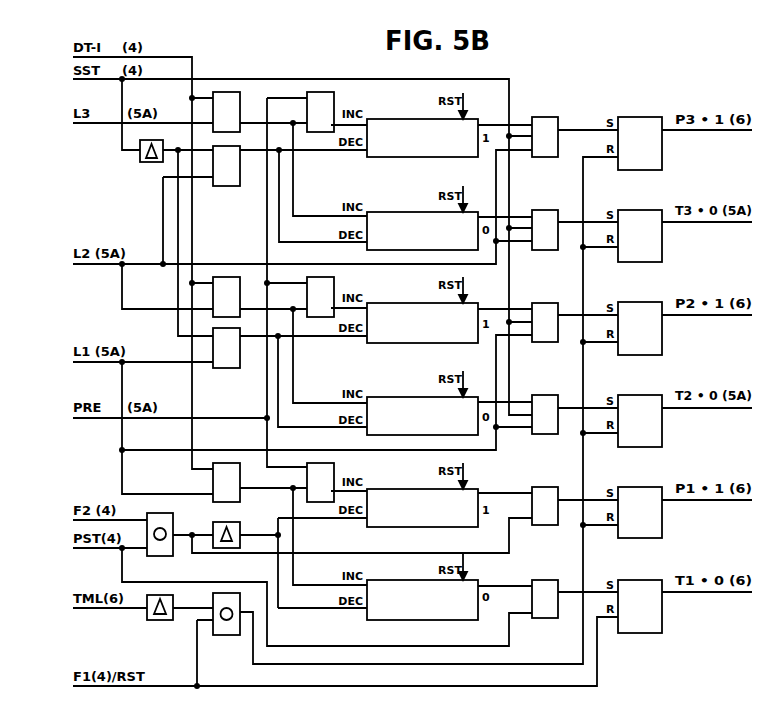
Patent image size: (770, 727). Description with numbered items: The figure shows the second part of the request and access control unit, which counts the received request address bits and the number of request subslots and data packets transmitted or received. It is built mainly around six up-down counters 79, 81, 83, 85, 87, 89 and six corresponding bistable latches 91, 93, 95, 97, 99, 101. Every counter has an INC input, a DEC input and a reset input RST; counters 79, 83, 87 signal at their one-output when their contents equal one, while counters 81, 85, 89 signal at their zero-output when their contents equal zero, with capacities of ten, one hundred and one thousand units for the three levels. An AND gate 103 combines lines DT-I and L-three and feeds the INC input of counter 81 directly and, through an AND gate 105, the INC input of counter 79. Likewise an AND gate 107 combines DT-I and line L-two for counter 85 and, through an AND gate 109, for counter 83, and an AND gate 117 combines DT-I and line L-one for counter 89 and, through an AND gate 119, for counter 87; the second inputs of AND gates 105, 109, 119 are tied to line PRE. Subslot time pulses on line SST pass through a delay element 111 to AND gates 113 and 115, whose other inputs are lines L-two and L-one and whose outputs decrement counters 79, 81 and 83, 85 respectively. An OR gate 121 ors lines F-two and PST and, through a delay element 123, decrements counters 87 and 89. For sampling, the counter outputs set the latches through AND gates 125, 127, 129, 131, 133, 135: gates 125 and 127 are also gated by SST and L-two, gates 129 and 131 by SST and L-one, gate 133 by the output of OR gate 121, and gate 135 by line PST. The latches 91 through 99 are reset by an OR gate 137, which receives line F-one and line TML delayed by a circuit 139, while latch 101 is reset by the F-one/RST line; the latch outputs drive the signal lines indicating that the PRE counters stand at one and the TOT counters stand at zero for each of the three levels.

The up-down counter PRE-B3 79 is at (418, 118).
The up-down counter TOT-B3 81 is at (418, 211).
The up-down counter PRE-B2 83 is at (418, 302).
The up-down counter TOT-B2 85 is at (418, 396).
The up-down counter PRE-B1 87 is at (418, 488).
The up-down counter TOT-B1 89 is at (418, 579).
The bistable latch 91 is at (645, 170).
The bistable latch 93 is at (645, 262).
The bistable latch 95 is at (645, 355).
The bistable latch 97 is at (645, 447).
The bistable latch 99 is at (645, 538).
The bistable latch 101 is at (648, 633).
The AND gate 103 is at (227, 92).
The AND gate 105 is at (320, 92).
The AND gate 107 is at (231, 277).
The AND gate 109 is at (333, 289).
The delay element 111 is at (151, 162).
The AND gate 113 is at (233, 186).
The AND gate 115 is at (233, 368).
The AND gate 117 is at (240, 478).
The AND gate 119 is at (334, 478).
The OR gate 121 is at (173, 526).
The delay element 123 is at (240, 526).
The AND gate 125 is at (556, 157).
The AND gate 127 is at (556, 250).
The AND gate 129 is at (556, 342).
The AND gate 131 is at (556, 434).
The AND gate 133 is at (556, 525).
The AND gate 135 is at (556, 618).
The OR gate 137 is at (234, 635).
The delay circuit 139 is at (158, 620).